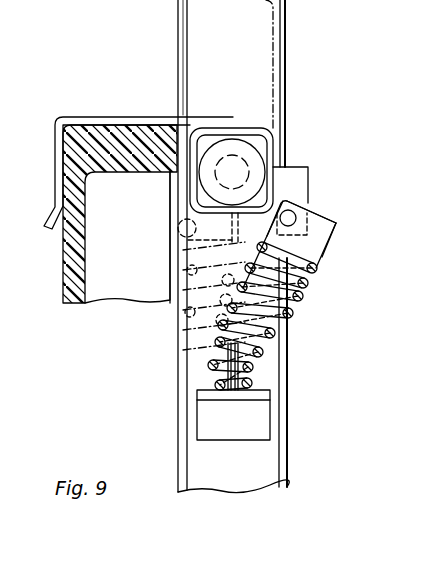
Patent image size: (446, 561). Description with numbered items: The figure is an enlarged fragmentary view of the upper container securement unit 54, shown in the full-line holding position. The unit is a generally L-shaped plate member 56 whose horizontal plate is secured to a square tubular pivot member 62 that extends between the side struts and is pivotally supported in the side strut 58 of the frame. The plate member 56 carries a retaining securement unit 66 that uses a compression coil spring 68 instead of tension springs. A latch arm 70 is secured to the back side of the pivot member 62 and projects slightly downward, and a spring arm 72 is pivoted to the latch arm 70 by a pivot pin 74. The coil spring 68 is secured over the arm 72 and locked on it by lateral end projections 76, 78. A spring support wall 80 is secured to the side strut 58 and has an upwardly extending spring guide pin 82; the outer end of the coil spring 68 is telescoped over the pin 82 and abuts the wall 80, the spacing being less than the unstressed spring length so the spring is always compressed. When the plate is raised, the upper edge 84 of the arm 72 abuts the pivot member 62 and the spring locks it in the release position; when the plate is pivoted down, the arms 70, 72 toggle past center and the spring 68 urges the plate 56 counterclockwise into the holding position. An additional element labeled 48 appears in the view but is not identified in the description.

The resilient pad 48 is at (60, 280).
The upper container securement unit 54 is at (187, 180).
The L-shaped plate member 56 is at (208, 122).
The side strut 58 is at (272, 468).
The square tubular pivot member 62 is at (258, 128).
The retaining securement unit 66 is at (176, 328).
The compression coil spring 68 is at (272, 338).
The latch arm 70 is at (307, 167).
The spring arm 72 is at (315, 252).
The pivot pin 74 is at (295, 215).
The lateral end projection 76 is at (228, 262).
The lateral end projection 78 is at (292, 300).
The spring support wall 80 is at (243, 401).
The spring guide pin 82 is at (228, 370).
The upper edge 84 is at (336, 221).